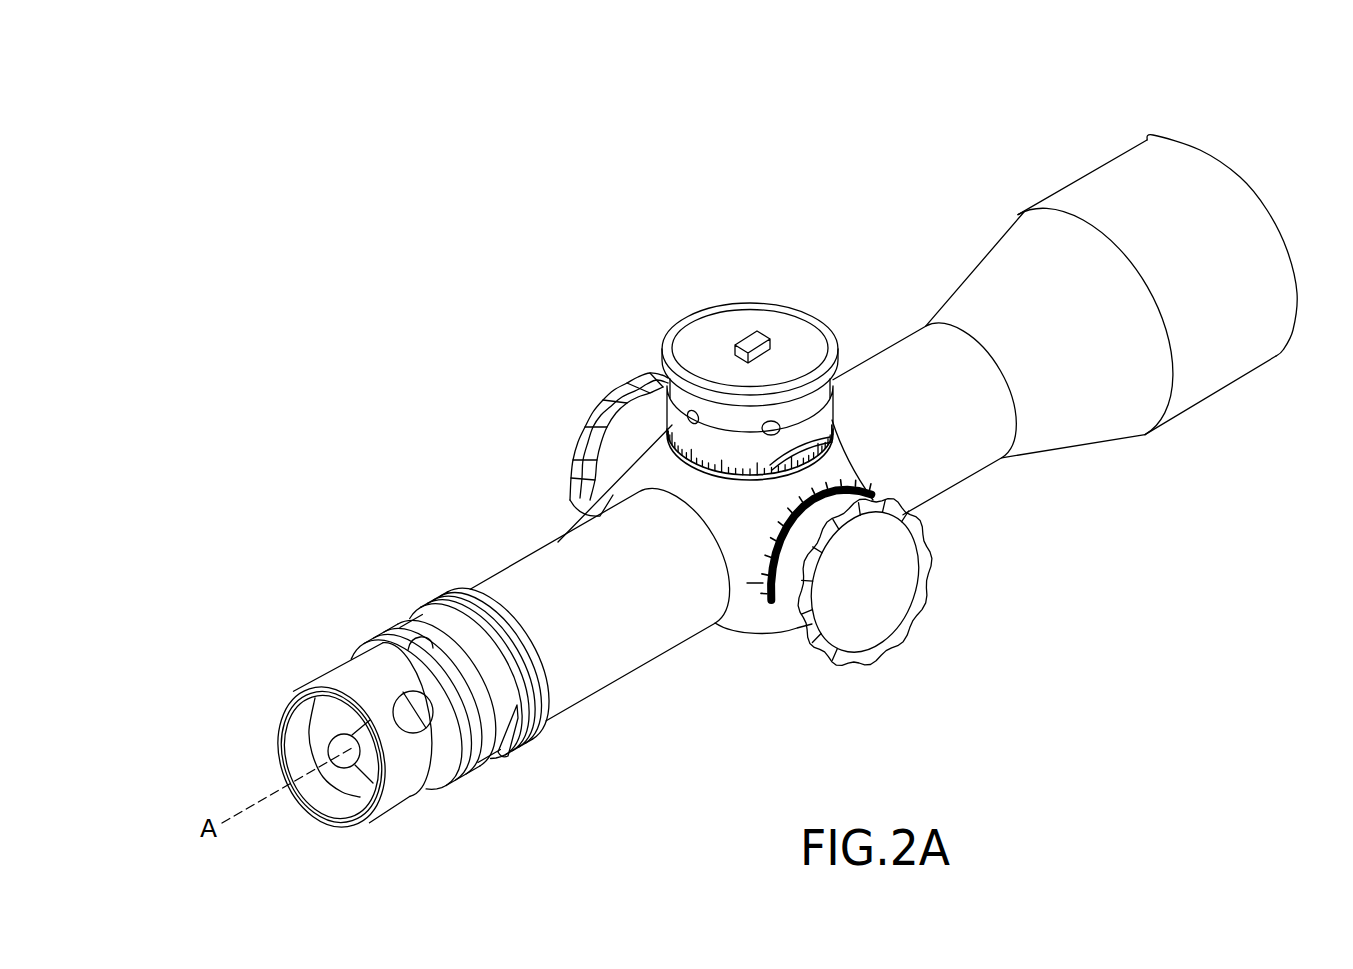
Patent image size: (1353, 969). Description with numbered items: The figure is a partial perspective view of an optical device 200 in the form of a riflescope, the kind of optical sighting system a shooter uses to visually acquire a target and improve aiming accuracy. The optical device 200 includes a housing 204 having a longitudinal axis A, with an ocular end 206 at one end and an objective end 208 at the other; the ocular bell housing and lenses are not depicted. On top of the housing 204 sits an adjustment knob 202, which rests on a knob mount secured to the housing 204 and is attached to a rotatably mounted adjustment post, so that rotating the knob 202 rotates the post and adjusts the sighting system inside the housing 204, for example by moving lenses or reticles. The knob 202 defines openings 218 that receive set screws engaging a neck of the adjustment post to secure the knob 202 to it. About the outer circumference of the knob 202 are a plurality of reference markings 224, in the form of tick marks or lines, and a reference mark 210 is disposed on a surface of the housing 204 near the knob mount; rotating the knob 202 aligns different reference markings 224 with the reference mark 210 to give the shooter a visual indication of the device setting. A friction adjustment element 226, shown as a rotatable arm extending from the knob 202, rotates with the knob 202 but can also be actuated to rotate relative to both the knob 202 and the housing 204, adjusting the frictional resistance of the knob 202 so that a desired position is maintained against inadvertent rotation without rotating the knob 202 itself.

The optical device 200 is at (990, 150).
The adjustment knob 202 is at (812, 318).
The housing 204 is at (952, 470).
The ocular end 206 is at (410, 836).
The objective end 208 is at (1243, 418).
The reference mark 210 is at (690, 483).
The openings 218 is at (690, 422).
The reference markings 224 is at (778, 458).
The friction adjustment element 226 is at (752, 337).